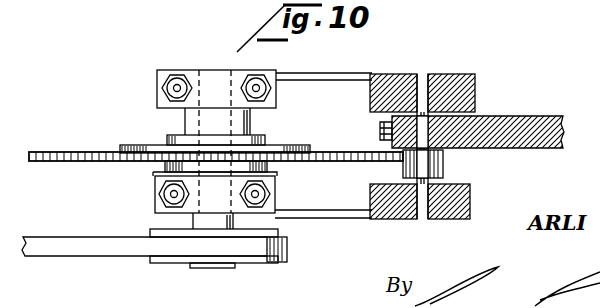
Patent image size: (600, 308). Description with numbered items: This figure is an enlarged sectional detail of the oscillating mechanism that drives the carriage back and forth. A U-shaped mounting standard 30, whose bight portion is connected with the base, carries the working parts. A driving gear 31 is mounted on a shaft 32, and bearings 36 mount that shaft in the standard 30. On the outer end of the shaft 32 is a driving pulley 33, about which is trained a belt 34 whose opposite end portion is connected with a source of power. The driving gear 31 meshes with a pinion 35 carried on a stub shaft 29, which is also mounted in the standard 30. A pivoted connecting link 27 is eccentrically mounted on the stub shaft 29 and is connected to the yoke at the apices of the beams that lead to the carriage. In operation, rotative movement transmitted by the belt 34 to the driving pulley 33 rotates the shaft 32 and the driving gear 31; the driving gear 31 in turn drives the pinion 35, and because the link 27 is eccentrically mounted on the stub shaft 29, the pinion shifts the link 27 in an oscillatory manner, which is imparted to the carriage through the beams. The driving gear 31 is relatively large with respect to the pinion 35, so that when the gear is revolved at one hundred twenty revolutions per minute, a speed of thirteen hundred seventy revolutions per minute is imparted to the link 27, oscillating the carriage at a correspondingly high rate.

The pivoted connecting link 27 is at (522, 118).
The stub shaft 29 is at (477, 76).
The U-shaped mounting standard 30 is at (333, 73).
The driving gear 31 is at (91, 160).
The shaft 32 is at (216, 270).
The driving pulley 33 is at (268, 263).
The belt 34 is at (128, 254).
The pinion 35 is at (445, 160).
The bearings 36 is at (205, 85).